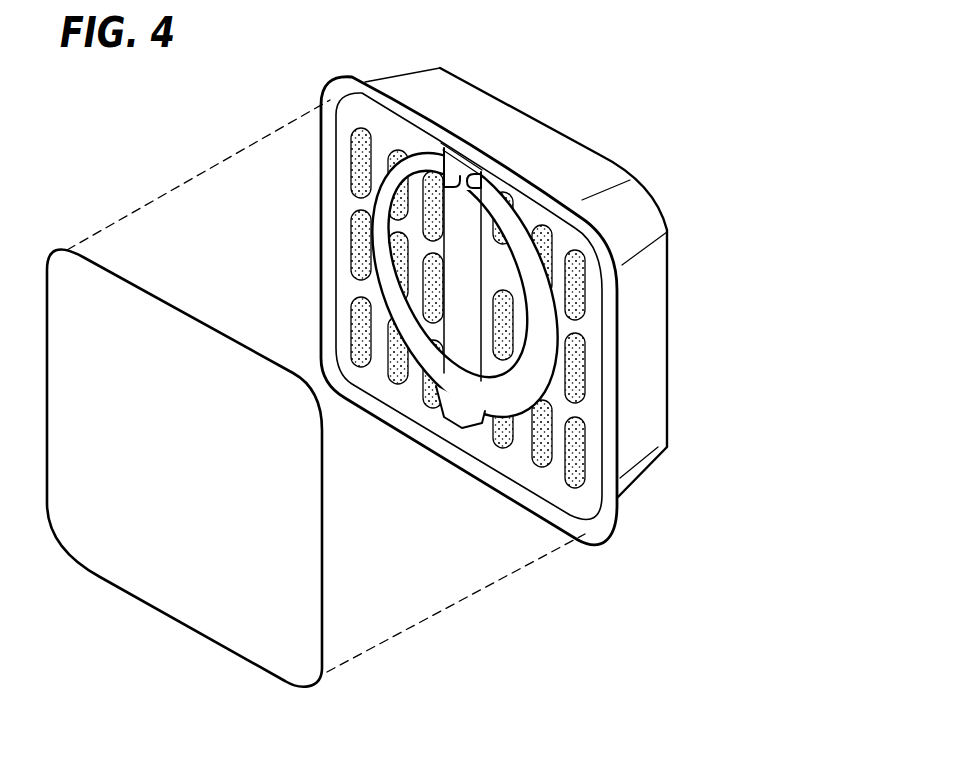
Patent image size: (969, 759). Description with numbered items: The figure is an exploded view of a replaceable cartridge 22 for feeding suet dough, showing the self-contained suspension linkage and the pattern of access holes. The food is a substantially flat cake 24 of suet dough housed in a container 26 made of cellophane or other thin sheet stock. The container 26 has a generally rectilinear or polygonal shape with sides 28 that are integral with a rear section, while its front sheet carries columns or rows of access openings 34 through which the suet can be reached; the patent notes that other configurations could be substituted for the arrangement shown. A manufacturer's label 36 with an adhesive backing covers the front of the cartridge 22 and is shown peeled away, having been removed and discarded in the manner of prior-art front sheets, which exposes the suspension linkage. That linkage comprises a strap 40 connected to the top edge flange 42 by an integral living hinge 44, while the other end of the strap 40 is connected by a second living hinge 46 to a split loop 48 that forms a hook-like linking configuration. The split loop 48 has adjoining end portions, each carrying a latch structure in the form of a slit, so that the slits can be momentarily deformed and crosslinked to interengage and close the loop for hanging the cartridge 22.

The cartridge 22 is at (692, 198).
The cake 24 is at (352, 322).
The container 26 is at (490, 289).
The sides 28 is at (487, 110).
The access openings 34 is at (582, 360).
The manufacturer's label 36 is at (191, 476).
The strap 40 is at (508, 223).
The top edge flange 42 is at (427, 124).
The living hinge 44 is at (460, 223).
The second living hinge 46 is at (462, 428).
The split loop 48 is at (515, 205).